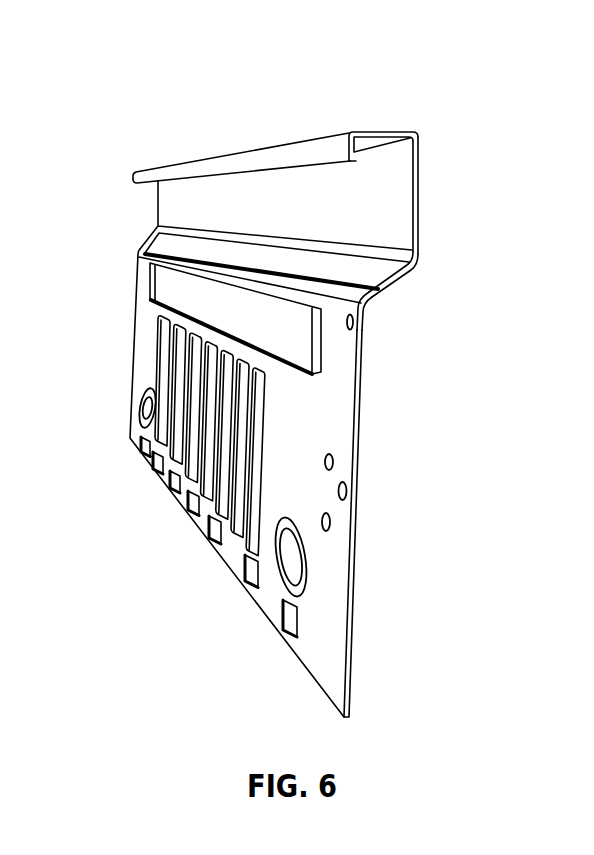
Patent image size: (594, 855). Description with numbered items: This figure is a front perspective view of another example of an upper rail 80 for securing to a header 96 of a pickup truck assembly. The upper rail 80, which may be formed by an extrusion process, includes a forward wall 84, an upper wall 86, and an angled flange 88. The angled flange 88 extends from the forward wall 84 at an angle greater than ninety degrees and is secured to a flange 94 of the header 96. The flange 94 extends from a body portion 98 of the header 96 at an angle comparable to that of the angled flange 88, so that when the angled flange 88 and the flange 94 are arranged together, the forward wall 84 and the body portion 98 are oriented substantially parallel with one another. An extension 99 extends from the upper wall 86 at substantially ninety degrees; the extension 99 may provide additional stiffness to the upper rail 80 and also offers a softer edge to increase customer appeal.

The upper rail 80 is at (328, 370).
The forward wall 84 is at (417, 198).
The upper wall 86 is at (388, 130).
The angled flange 88 is at (403, 291).
The flange 94 is at (387, 290).
The header 96 is at (332, 436).
The body portion 98 is at (356, 480).
The extension 99 is at (318, 148).